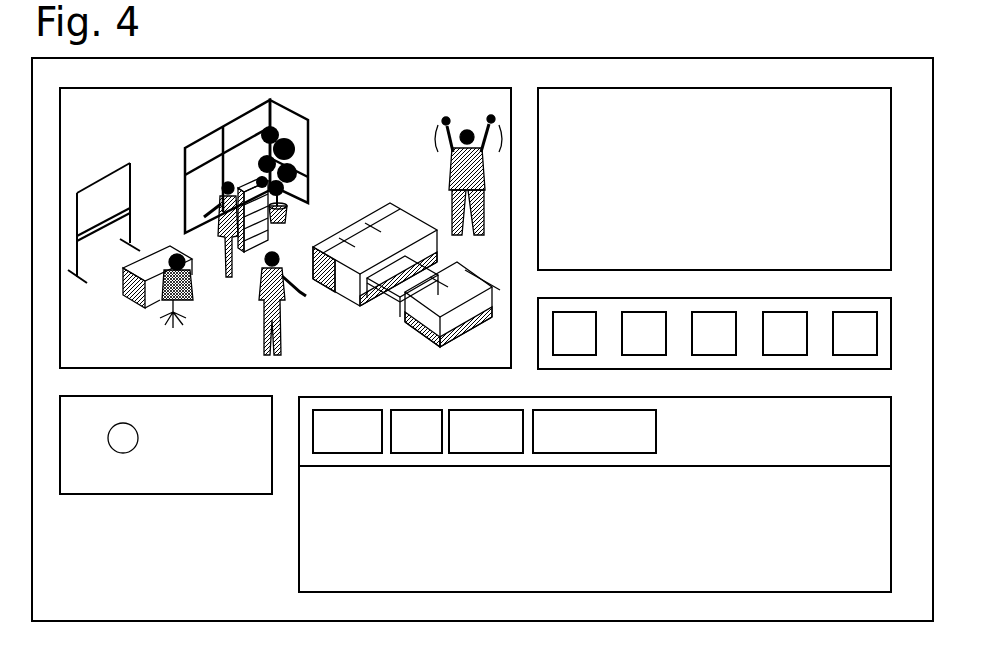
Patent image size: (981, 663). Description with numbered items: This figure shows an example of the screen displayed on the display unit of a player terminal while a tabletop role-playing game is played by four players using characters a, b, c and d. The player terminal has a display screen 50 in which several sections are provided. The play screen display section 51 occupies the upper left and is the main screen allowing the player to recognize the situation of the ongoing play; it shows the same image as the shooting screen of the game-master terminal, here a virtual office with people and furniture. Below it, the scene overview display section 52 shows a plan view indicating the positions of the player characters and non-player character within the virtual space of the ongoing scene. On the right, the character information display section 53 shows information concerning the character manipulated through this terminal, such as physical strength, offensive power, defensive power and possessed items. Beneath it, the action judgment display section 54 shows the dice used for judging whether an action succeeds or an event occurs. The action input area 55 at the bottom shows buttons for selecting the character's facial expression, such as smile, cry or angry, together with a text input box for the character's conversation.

The display screen 50 is at (393, 58).
The play screen display section 51 is at (307, 88).
The scene overview display section 52 is at (97, 496).
The character information display section 53 is at (793, 88).
The action judgment display section 54 is at (863, 298).
The action input area 55 is at (299, 538).